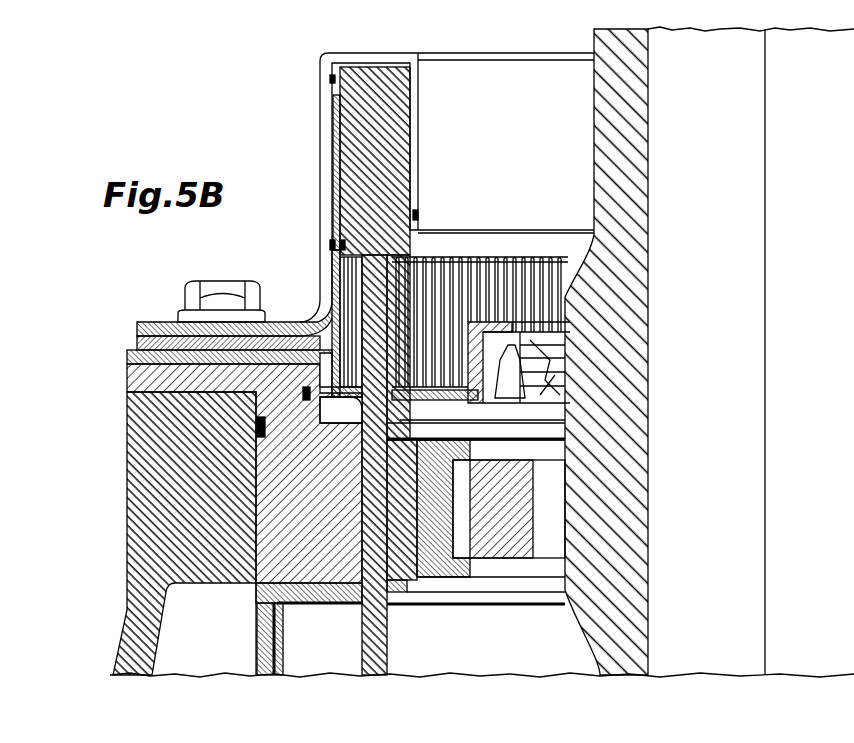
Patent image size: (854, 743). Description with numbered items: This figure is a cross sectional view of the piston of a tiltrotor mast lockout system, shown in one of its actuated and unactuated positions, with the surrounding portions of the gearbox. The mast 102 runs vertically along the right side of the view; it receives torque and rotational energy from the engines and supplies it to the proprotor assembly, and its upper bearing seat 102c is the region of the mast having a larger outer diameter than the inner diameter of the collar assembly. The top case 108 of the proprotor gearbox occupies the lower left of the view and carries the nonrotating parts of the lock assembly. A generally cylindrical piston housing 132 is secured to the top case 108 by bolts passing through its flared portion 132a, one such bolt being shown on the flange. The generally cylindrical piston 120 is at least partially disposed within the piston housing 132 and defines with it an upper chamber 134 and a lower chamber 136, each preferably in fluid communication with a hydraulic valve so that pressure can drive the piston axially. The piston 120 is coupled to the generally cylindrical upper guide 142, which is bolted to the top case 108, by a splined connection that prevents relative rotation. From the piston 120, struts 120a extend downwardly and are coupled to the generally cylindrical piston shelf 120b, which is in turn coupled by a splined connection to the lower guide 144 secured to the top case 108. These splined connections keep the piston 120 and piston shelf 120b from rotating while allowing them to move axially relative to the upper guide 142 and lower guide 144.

The mast 102 is at (625, 100).
The upper bearing seat 102c is at (565, 508).
The top case 108 is at (145, 458).
The piston 120 is at (355, 75).
The struts 120a is at (375, 497).
The piston shelf 120b is at (300, 652).
The piston housing 132 is at (326, 95).
The flared portion 132a is at (157, 322).
The upper chamber 134 is at (377, 65).
The lower chamber 136 is at (333, 148).
The upper guide 142 is at (352, 275).
The lower guide 144 is at (250, 597).